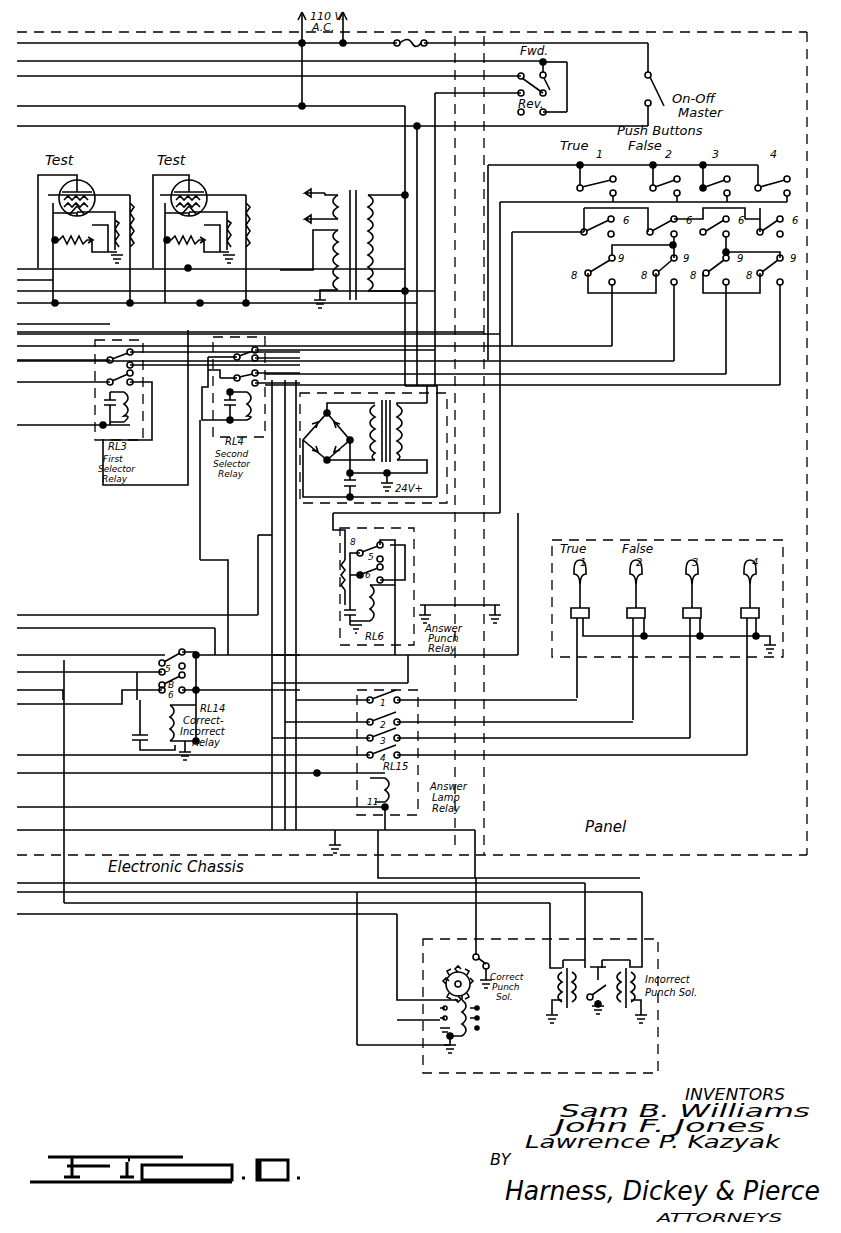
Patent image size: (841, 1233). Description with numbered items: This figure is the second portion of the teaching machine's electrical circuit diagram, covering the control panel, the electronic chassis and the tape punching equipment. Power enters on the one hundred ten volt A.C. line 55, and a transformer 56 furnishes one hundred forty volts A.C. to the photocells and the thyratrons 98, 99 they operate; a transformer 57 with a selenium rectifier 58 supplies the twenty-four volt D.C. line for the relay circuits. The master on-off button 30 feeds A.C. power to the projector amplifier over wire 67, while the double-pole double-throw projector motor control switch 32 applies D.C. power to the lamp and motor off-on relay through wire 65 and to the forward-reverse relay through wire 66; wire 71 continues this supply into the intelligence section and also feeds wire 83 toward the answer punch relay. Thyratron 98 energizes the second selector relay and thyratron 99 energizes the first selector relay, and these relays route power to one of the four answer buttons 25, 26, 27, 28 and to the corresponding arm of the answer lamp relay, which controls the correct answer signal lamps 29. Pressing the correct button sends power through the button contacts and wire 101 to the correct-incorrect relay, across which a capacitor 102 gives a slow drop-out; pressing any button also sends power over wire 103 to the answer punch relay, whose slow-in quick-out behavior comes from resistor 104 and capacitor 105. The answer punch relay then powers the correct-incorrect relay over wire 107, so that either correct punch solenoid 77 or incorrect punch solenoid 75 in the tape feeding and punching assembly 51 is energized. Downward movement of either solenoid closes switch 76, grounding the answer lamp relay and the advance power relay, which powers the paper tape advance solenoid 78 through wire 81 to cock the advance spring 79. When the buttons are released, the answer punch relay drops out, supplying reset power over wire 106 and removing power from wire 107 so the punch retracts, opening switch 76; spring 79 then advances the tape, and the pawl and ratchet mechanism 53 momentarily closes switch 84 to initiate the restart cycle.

The answer button 25 is at (583, 243).
The answer button 26 is at (668, 258).
The answer button 27 is at (756, 243).
The answer button 28 is at (790, 243).
The correct answer signal lamps 29 is at (640, 585).
The master on-off button 30 is at (660, 84).
The projector motor control button 32 is at (548, 90).
The tape feeding and punching assembly 51 is at (465, 1076).
The solenoid-operated pawl and ratchet mechanism 53 is at (468, 995).
The 110 volt A.C. line 55 is at (308, 55).
The transformer 56 is at (352, 302).
The transformer 57 is at (398, 432).
The selenium rectifier 58 is at (330, 425).
The wire 65 is at (104, 48).
The wire 66 is at (88, 78).
The wire 67 is at (62, 128).
The wire 71 is at (28, 776).
The incorrect punch solenoid 75 is at (633, 980).
The switch 76 is at (588, 1000).
The correct punch solenoid 77 is at (560, 968).
The paper tape advance solenoid 78 is at (462, 1032).
The advance spring 79 is at (440, 1020).
The wire 81 is at (42, 918).
The wire 83 is at (315, 670).
The switch 84 is at (480, 955).
The thyratron 98 is at (207, 196).
The thyratron 99 is at (95, 196).
The wire 101 is at (516, 305).
The capacitor 102 is at (128, 722).
The wire 103 is at (316, 320).
The resistor 104 is at (330, 545).
The capacitor 105 is at (338, 585).
The wire 106 is at (78, 612).
The wire 107 is at (412, 670).